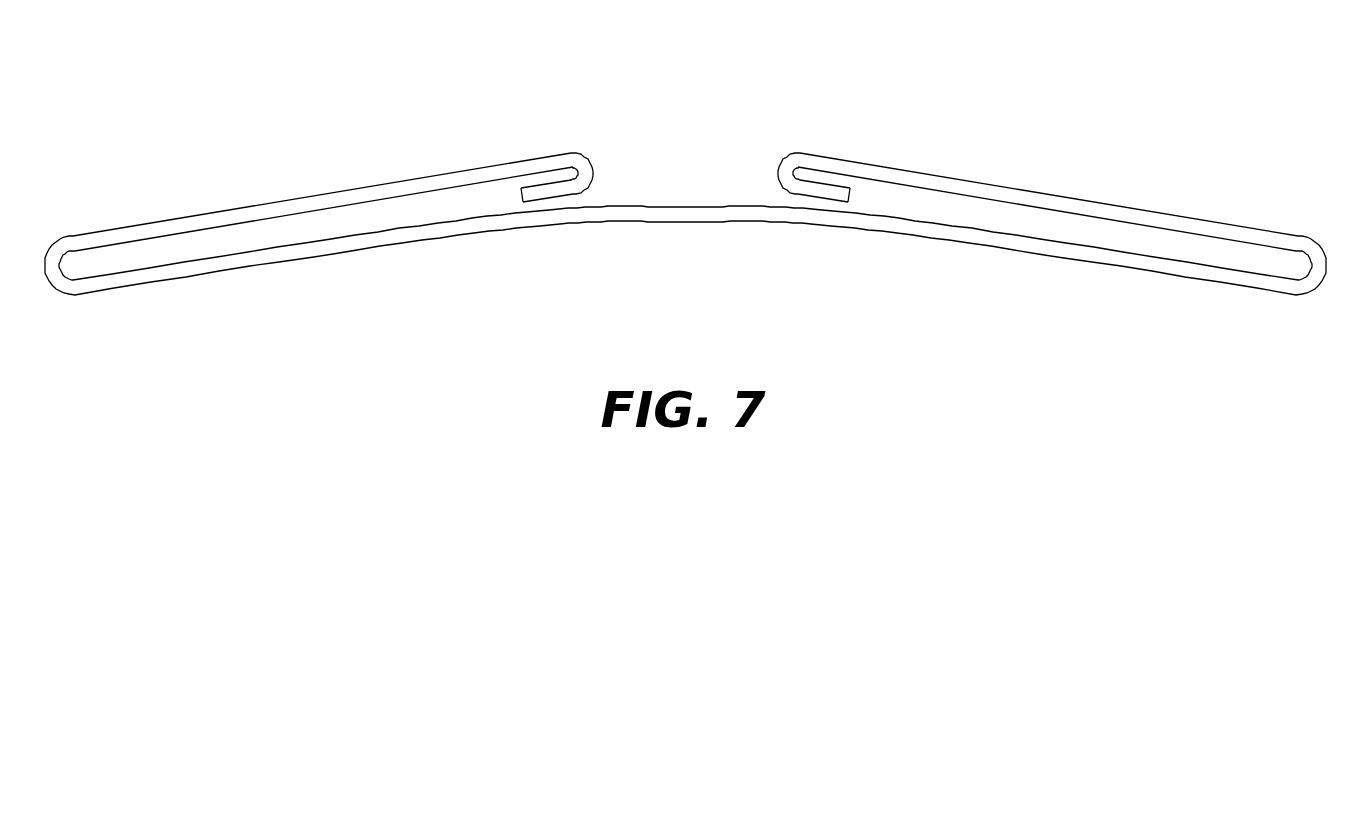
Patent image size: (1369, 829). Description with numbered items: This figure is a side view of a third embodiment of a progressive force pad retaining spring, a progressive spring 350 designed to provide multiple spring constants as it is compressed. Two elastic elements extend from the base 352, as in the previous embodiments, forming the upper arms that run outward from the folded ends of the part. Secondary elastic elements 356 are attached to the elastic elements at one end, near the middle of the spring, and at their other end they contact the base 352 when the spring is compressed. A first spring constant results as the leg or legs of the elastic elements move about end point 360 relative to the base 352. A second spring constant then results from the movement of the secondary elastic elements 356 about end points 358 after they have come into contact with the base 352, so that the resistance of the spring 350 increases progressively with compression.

The progressive spring 350 is at (1005, 126).
The base 352 is at (788, 223).
The secondary elastic elements 356 is at (590, 201).
The end points 358 is at (772, 167).
The end point 360 is at (1325, 288).